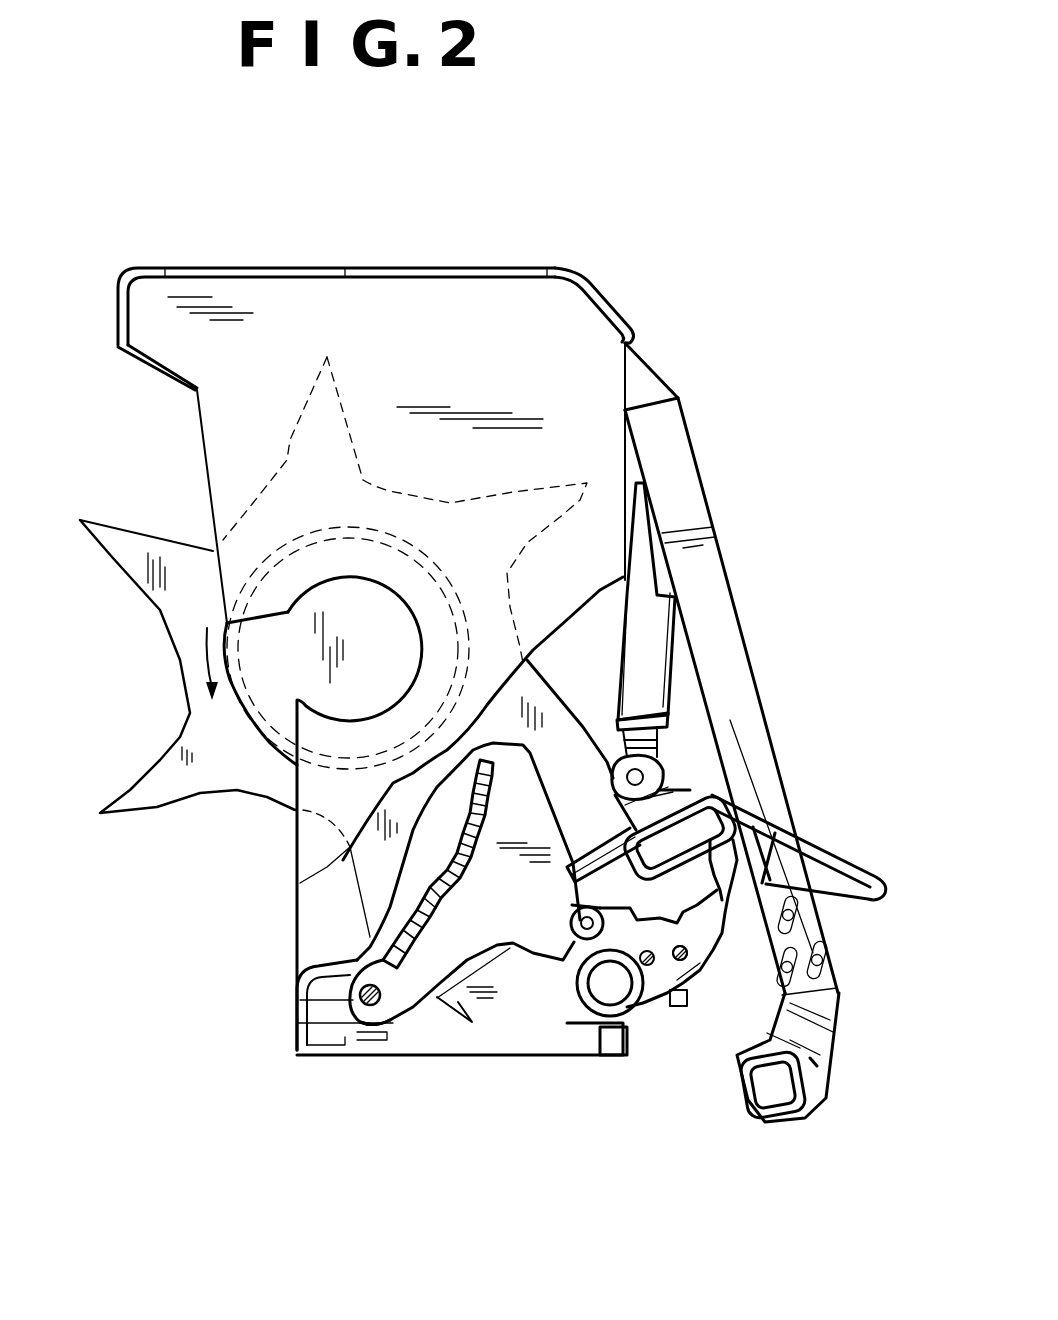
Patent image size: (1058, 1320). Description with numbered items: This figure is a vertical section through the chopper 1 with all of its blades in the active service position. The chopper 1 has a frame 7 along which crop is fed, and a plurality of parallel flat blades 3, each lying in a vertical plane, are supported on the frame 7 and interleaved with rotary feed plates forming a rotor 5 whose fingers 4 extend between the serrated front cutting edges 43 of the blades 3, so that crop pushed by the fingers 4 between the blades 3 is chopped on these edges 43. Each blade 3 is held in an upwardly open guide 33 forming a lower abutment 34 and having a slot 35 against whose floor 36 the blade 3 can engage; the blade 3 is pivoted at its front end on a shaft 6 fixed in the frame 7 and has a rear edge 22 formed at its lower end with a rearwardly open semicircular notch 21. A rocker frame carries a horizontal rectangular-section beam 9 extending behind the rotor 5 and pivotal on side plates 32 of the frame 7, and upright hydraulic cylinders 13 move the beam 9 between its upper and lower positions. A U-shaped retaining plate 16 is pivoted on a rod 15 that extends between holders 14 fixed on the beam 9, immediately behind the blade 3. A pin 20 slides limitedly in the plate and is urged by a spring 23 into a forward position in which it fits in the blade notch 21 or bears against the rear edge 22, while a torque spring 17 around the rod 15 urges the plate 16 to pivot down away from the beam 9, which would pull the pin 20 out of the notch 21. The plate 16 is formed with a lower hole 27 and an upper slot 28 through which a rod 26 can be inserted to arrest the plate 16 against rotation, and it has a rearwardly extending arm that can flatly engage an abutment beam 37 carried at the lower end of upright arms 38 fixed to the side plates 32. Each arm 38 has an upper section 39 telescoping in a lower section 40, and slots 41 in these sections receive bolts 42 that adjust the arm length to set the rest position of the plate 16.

The chopper 1 is at (270, 820).
The flat blade 3 is at (513, 867).
The finger 4 is at (380, 925).
The rotor 5 is at (138, 547).
The shaft 6 is at (300, 1003).
The frame 7 is at (497, 277).
The beam 9 is at (563, 832).
The hydraulic cylinder 13 is at (648, 590).
The holder 14 is at (770, 832).
The rod 15 is at (647, 968).
The retaining plate 16 is at (622, 940).
The torque spring 17 is at (800, 885).
The pin 20 is at (563, 967).
The notch 21 is at (575, 940).
The rear edge 22 is at (690, 755).
The spring 23 is at (600, 1000).
The rod 26 is at (683, 958).
The lower hole 27 is at (697, 1070).
The upper slot 28 is at (745, 987).
The side plate 32 is at (563, 317).
The guide 33 is at (365, 1040).
The lower abutment 34 is at (413, 1013).
The slot 35 is at (453, 1010).
The floor 36 is at (460, 1020).
The abutment beam 37 is at (782, 1115).
The upright arm 38 is at (737, 487).
The upper section 39 is at (673, 440).
The lower section 40 is at (815, 1060).
The slot 41 is at (800, 920).
The bolt 42 is at (830, 955).
The front cutting edge 43 is at (207, 640).